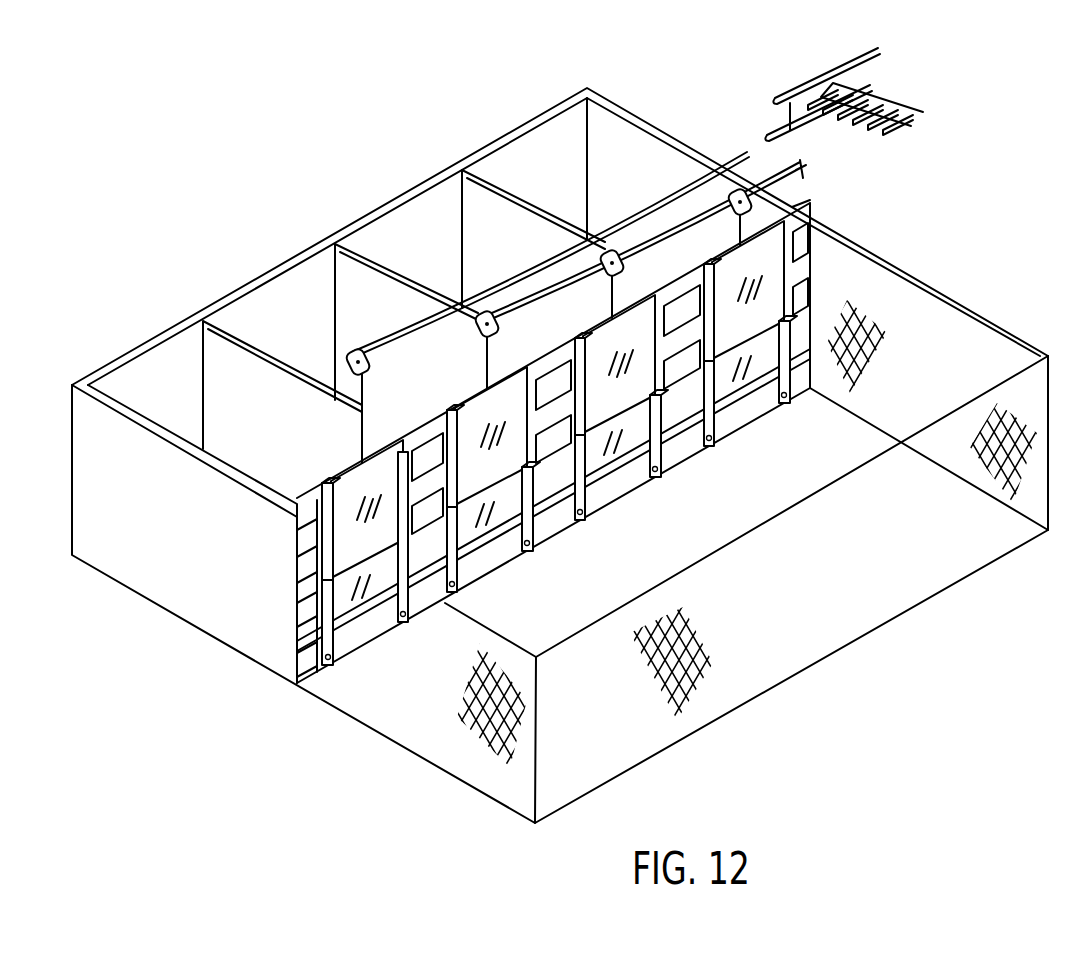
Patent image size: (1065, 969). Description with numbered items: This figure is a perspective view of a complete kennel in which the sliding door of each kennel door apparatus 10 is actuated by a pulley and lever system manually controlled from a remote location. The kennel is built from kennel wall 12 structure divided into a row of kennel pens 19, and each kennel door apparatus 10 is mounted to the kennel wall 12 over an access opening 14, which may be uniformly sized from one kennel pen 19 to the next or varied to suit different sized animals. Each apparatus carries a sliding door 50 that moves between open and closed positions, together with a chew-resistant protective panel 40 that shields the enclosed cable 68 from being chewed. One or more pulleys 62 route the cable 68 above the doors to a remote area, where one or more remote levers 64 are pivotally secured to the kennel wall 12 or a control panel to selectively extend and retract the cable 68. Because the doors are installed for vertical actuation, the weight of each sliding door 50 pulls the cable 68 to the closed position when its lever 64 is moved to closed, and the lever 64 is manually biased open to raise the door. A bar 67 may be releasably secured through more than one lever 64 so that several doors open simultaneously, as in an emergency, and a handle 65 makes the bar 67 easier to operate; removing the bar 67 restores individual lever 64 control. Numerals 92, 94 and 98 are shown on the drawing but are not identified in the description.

The kennel wall 12 is at (297, 593).
The front wall 92 is at (663, 562).
The insulation 94 is at (487, 752).
The cable 68 is at (492, 233).
The kennel door apparatus 10 is at (363, 664).
The access opening 14 is at (392, 625).
The sliding door 50 is at (358, 592).
The protective panel 40 is at (344, 486).
The kennel pen 19 is at (285, 440).
The pulley 62 is at (352, 350).
The bar 67 is at (840, 83).
The handle 65 is at (802, 80).
The comb bracket 98 is at (880, 93).
The remote lever 64 is at (937, 133).